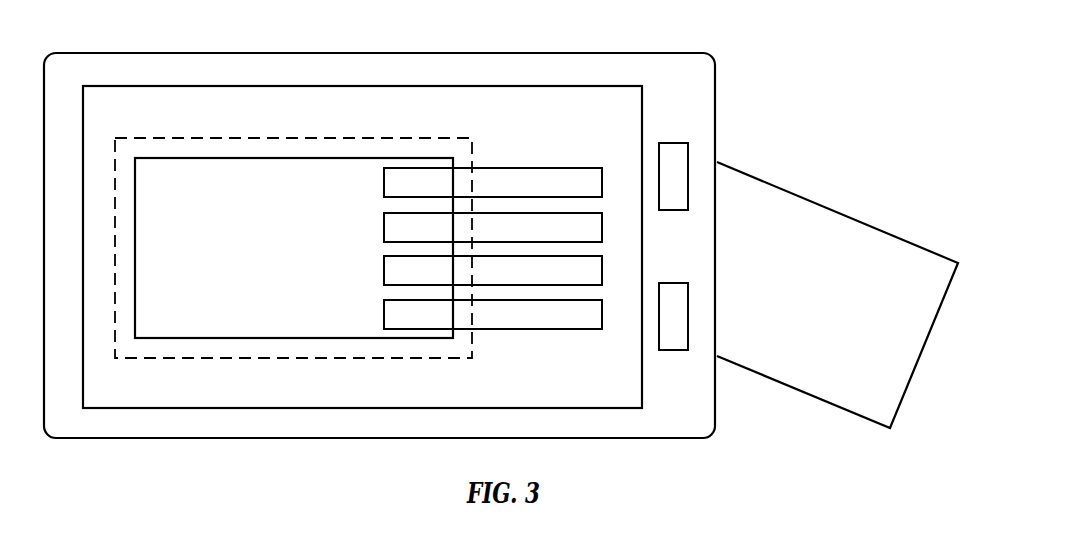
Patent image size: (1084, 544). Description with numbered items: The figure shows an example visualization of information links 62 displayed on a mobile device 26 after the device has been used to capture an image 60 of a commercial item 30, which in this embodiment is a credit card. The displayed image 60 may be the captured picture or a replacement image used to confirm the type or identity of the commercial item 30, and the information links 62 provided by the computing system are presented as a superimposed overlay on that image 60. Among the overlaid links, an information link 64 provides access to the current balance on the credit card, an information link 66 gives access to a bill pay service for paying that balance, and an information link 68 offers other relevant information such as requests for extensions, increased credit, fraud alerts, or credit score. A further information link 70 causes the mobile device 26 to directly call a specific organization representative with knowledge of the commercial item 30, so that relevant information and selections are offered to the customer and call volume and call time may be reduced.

The mobile device 26 is at (380, 53).
The commercial item 30 is at (800, 196).
The image 60 is at (293, 338).
The information links 62 is at (555, 131).
The information link 64 is at (602, 184).
The information link 66 is at (602, 228).
The information link 68 is at (602, 271).
The information link 70 is at (602, 315).